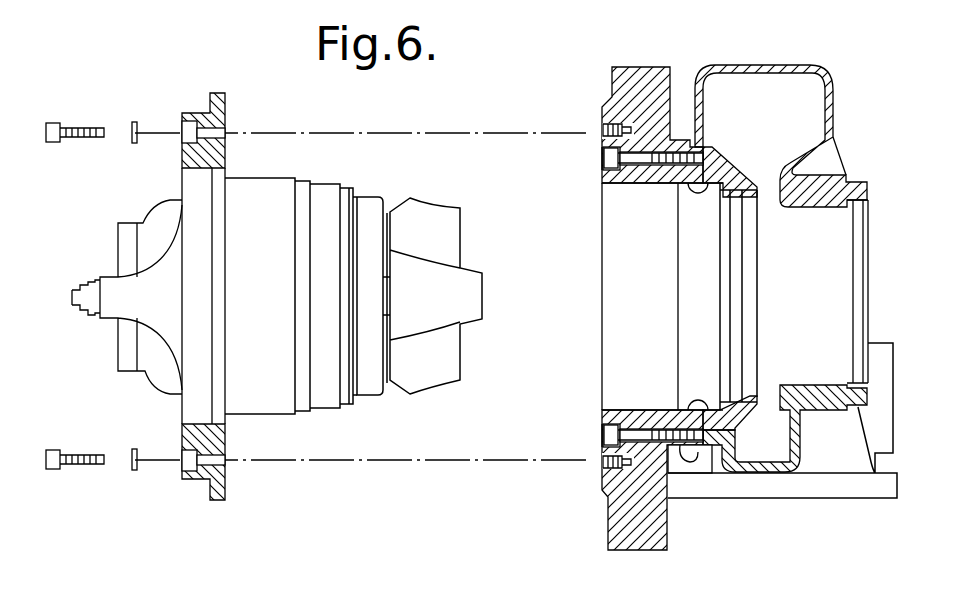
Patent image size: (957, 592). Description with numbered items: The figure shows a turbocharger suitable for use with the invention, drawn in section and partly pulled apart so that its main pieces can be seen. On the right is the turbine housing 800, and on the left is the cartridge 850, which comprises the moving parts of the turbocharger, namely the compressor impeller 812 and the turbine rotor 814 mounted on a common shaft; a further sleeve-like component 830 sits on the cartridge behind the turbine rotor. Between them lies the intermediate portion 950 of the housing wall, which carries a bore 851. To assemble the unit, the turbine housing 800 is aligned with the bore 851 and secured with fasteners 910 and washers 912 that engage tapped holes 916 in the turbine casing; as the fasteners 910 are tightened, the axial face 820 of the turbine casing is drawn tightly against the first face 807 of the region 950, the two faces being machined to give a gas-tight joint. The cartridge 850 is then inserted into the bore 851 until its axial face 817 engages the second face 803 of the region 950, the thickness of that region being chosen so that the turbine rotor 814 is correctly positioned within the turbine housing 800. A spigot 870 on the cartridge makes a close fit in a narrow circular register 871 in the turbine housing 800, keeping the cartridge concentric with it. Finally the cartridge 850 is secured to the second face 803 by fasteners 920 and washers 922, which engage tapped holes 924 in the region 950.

The turbine housing 800 is at (818, 72).
The second face 803 is at (602, 483).
The first face 807 is at (683, 450).
The compressor impeller 812 is at (116, 318).
The turbine rotor 814 is at (442, 205).
The axial face 817 is at (227, 443).
The axial face 820 is at (672, 417).
The heat shield 830 is at (370, 196).
The cartridge 850 is at (288, 275).
The bore 851 is at (655, 246).
The spigot 870 is at (302, 178).
The narrow circular register 871 is at (717, 170).
The fasteners 910 is at (605, 163).
The washers 912 is at (603, 187).
The tapped holes 916 is at (692, 147).
The fasteners 920 is at (78, 122).
The washers 922 is at (137, 122).
The tapped holes 924 is at (602, 133).
The intermediate portion 950 is at (642, 110).